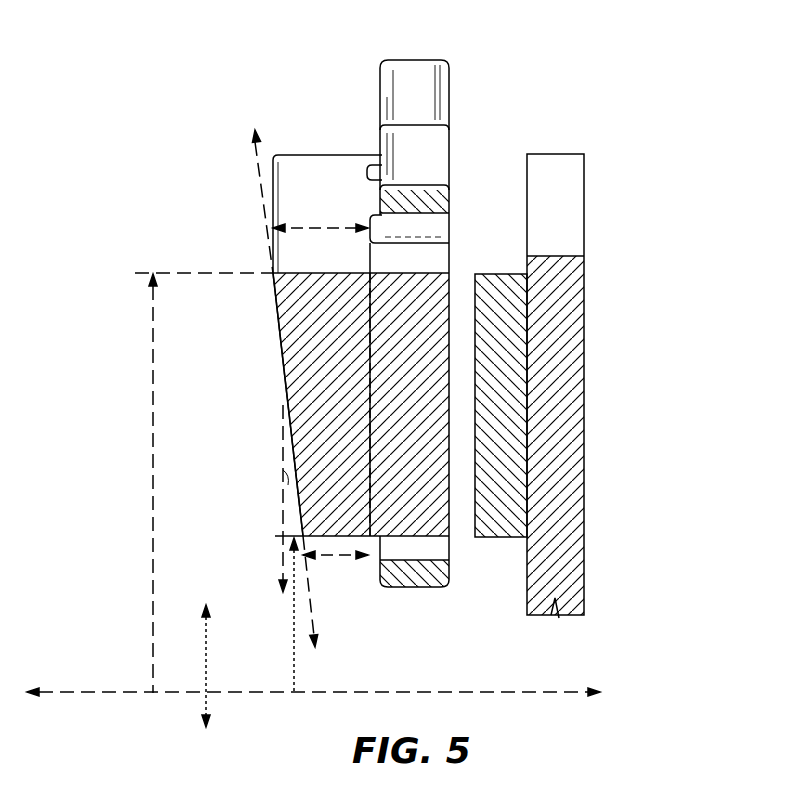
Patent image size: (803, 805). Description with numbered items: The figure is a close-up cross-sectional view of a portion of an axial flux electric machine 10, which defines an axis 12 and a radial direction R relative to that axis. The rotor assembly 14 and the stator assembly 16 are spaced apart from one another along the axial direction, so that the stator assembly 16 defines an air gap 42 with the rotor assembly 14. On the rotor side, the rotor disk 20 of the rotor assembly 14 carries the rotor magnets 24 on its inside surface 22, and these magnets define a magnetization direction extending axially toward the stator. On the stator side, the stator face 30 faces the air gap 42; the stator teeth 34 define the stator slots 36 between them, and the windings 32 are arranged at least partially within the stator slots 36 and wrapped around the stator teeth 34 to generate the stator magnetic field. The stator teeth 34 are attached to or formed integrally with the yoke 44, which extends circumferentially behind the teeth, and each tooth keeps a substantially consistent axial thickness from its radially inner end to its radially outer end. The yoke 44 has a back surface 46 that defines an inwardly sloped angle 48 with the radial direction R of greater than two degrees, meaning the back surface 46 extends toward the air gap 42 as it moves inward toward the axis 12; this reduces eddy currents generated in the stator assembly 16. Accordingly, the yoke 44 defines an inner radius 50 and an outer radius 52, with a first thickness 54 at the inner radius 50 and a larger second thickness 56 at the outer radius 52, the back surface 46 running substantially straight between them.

The electric machine 10 is at (586, 28).
The axis 12 is at (515, 696).
The rotor assembly 14 is at (620, 230).
The stator assembly 16 is at (334, 46).
The rotor disk 20 is at (572, 565).
The inside surface 22 is at (458, 255).
The rotor magnets 24 is at (517, 342).
The stator face 30 is at (490, 165).
The windings 32 is at (418, 110).
The stator teeth 34 is at (397, 257).
The stator slots 36 is at (432, 195).
The air gap 42 is at (480, 437).
The yoke 44 is at (313, 317).
The back surface 46 is at (262, 420).
The inwardly sloped angle 48 is at (283, 478).
The inner radius 50 is at (293, 628).
The outer radius 52 is at (152, 367).
The first thickness 54 is at (340, 558).
The second thickness 56 is at (323, 225).
The radial direction R is at (290, 543).